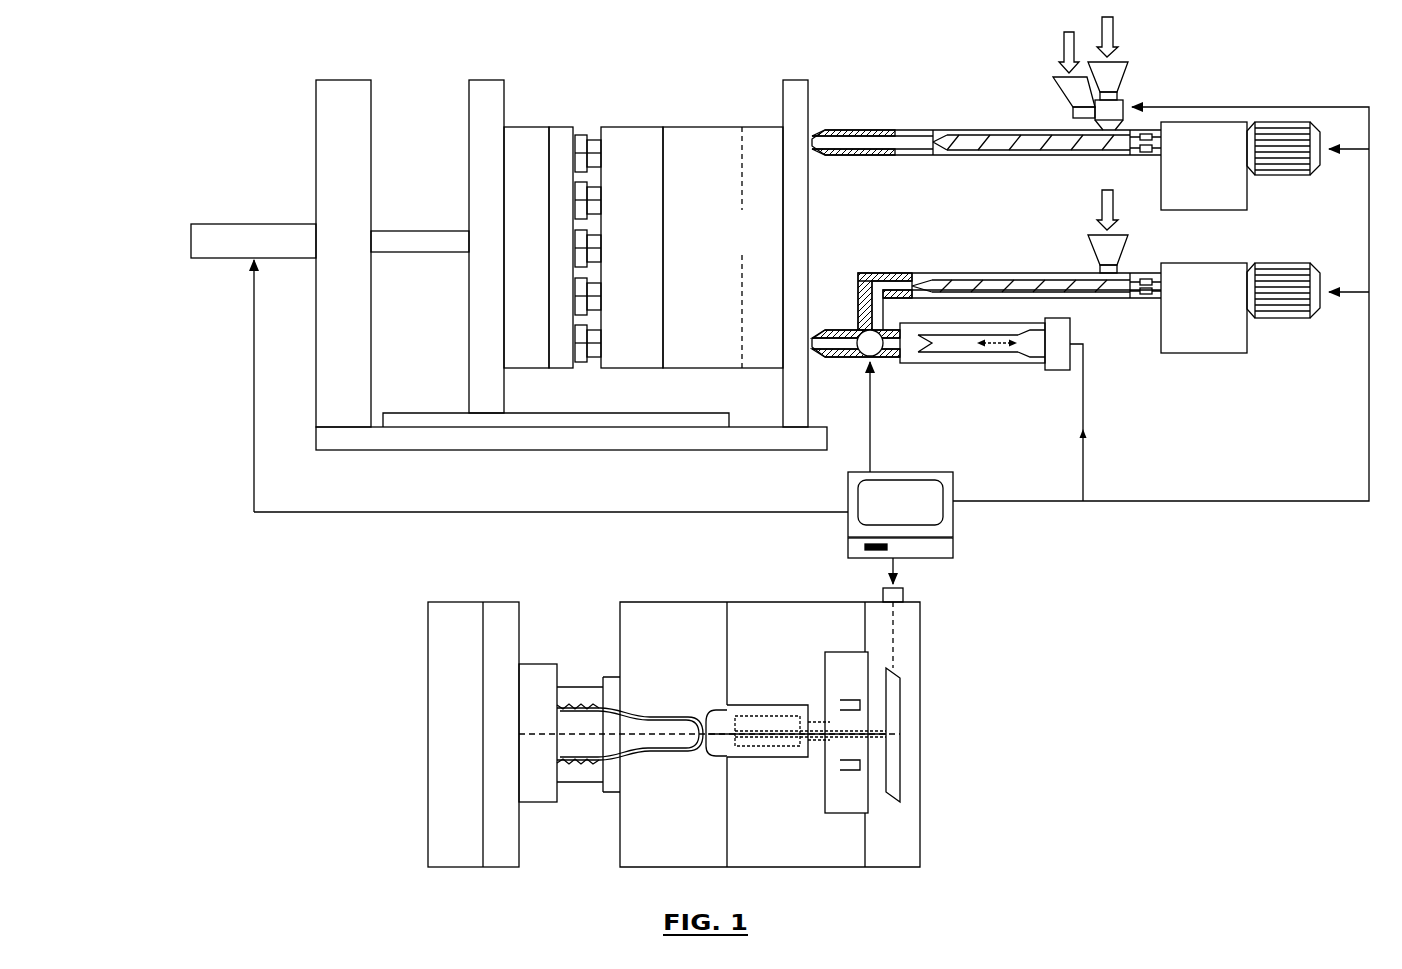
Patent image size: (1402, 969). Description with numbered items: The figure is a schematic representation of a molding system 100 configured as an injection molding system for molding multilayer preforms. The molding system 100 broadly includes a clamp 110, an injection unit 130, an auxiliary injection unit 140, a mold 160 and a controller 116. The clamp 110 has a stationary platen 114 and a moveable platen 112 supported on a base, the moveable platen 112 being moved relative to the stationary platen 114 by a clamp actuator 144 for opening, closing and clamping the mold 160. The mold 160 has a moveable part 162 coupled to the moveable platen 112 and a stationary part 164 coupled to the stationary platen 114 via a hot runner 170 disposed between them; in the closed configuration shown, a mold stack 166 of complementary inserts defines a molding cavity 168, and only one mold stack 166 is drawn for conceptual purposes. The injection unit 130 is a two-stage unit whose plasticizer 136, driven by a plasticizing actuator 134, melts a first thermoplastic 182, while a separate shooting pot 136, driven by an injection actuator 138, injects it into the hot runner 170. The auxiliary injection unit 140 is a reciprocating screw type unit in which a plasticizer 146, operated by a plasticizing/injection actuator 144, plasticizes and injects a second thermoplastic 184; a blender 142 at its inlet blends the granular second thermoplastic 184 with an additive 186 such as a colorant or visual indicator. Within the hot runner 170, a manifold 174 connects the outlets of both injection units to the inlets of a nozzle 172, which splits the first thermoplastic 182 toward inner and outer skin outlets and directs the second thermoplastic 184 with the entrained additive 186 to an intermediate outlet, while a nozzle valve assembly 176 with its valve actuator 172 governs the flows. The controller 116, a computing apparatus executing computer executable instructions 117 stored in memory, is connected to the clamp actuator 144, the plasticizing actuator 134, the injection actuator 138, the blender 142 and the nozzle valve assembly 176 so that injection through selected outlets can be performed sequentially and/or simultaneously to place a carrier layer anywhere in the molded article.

The molding system 100 is at (270, 118).
The clamp 110 is at (416, 92).
The moveable platen 112 is at (490, 394).
The stationary platen 114 is at (800, 410).
The controller 116 is at (900, 504).
The computer executable instructions 117 is at (862, 546).
The injection unit 130 is at (906, 253).
The plasticizing actuator 134 is at (1283, 317).
The plasticizer and shooting pot 136 is at (1008, 276).
The injection actuator 138 is at (1082, 358).
The auxiliary injection unit 140 is at (906, 90).
The blender 142 is at (1072, 107).
The plasticizing/injection actuator 144 is at (232, 252).
The plasticizer 146 is at (988, 128).
The mold 160 is at (581, 118).
The mold plate 162 is at (526, 247).
The stationary part 164 is at (632, 247).
The mold stack 166 is at (646, 770).
The molding cavity 168 is at (660, 715).
The hot runner 170 is at (893, 904).
The nozzle 172 is at (905, 594).
The manifold 174 is at (830, 805).
The nozzle valve assembly 176 is at (872, 775).
The first thermoplastic 182 is at (1096, 224).
The second thermoplastic 184 is at (1116, 37).
The additive 186 is at (1060, 55).